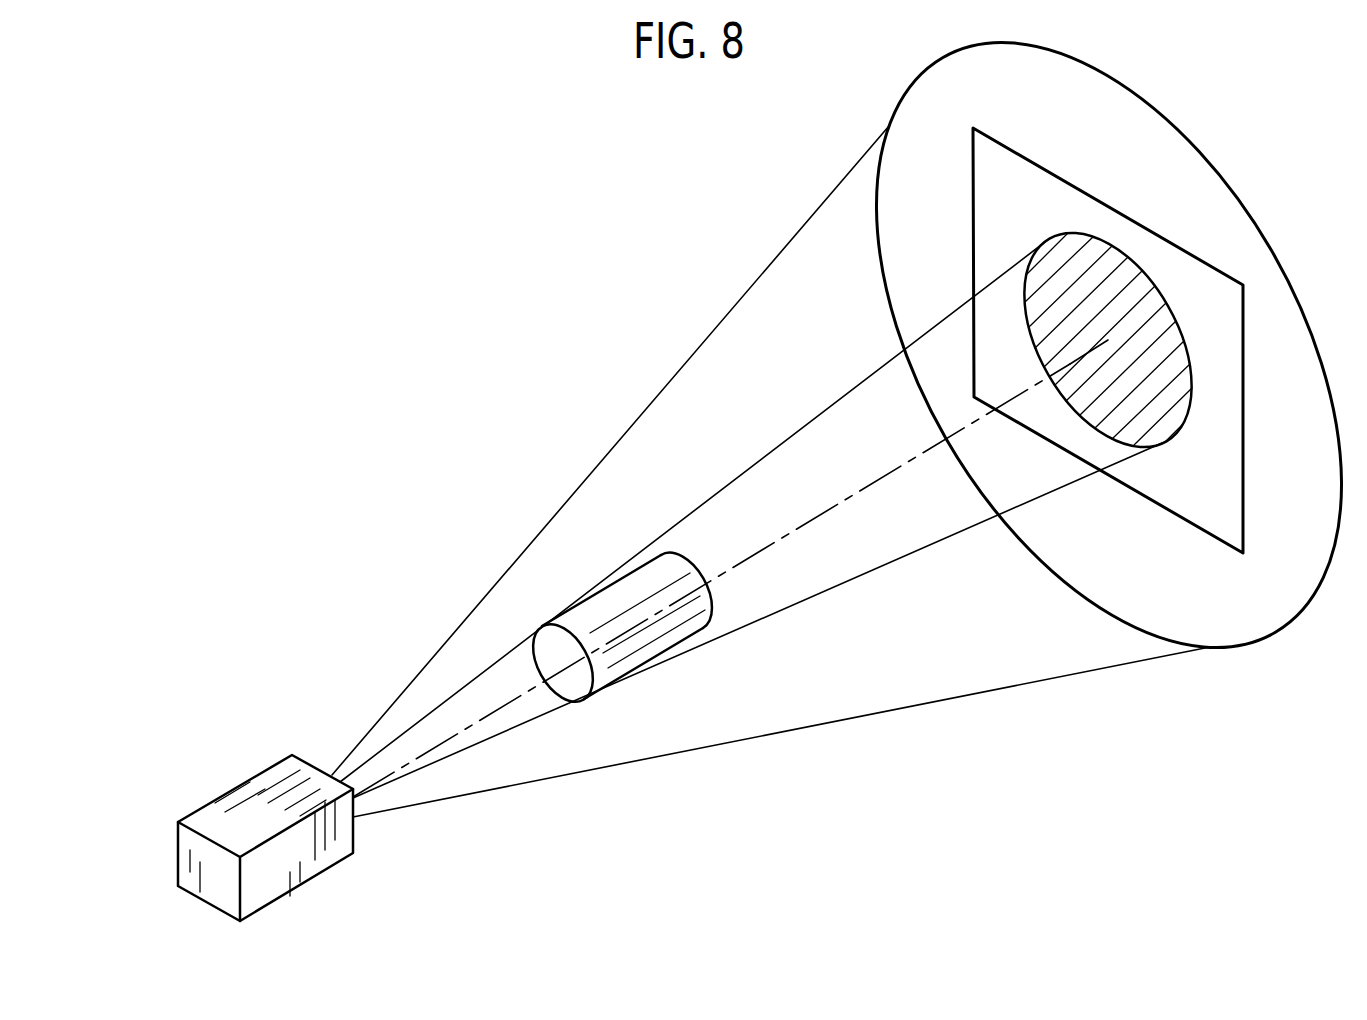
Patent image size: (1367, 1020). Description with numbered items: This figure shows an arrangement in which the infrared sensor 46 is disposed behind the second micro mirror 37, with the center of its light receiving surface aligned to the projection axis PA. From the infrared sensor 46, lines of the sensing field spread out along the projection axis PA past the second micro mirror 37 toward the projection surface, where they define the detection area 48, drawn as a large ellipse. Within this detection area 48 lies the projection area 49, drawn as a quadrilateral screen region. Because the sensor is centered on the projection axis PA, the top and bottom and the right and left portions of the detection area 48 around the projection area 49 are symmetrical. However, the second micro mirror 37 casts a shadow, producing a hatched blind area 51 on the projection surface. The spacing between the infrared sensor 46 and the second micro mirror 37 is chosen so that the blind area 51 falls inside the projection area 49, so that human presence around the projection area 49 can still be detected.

The infrared sensor 46 is at (242, 783).
The second micro mirror 37 is at (617, 600).
The projection axis PA is at (900, 463).
The detection area 48 is at (1243, 192).
The projection area 49 is at (1047, 170).
The blind area 51 is at (1130, 290).